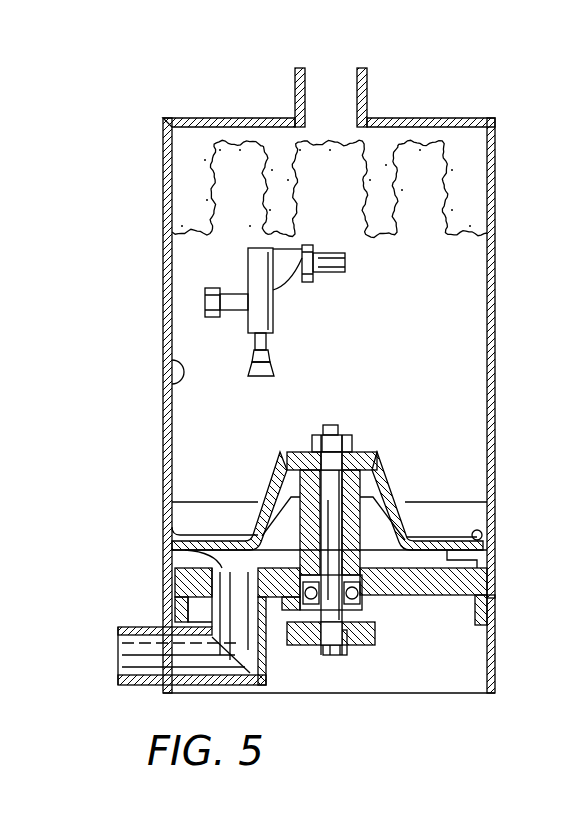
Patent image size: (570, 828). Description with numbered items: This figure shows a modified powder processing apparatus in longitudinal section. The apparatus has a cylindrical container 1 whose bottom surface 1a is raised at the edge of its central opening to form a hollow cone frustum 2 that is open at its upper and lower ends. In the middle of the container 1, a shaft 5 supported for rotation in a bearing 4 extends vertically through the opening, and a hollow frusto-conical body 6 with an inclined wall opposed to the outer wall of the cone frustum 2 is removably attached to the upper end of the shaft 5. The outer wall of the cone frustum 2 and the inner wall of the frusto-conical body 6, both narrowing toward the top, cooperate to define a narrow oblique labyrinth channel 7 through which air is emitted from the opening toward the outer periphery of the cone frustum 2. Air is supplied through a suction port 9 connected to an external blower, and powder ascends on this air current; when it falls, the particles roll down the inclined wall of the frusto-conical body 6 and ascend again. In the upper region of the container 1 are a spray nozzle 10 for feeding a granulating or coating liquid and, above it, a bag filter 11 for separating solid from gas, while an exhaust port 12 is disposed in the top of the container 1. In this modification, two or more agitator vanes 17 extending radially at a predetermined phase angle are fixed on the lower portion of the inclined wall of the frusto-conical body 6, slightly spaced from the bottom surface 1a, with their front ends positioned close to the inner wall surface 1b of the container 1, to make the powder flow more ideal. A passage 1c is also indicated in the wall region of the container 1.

The cylindrical container 1 is at (163, 295).
The bottom surface 1a is at (487, 581).
The inner wall surface 1b is at (163, 366).
The passage in housing 1c is at (490, 556).
The hollow cone frustum 2 is at (389, 496).
The bearing 4 is at (387, 598).
The shaft 5 is at (344, 655).
The hollow frusto-conical body 6 is at (362, 452).
The labyrinth channel 7 is at (277, 497).
The suction port 9 is at (163, 553).
The spray nozzle 10 is at (268, 343).
The bag filter 11 is at (365, 195).
The exhaust port 12 is at (345, 90).
The agitator vanes 17 is at (213, 502).